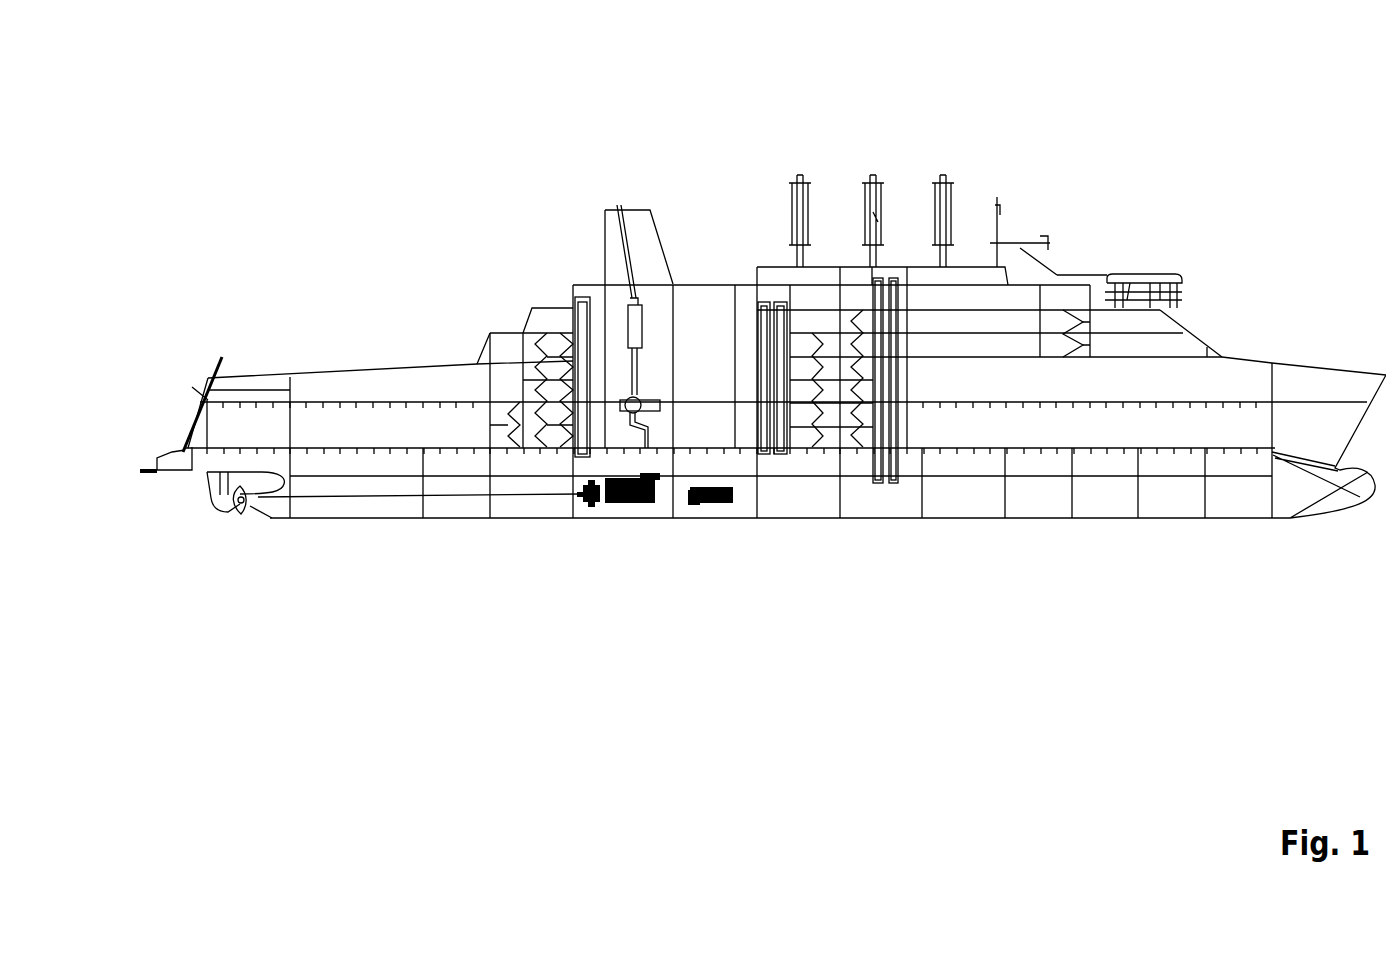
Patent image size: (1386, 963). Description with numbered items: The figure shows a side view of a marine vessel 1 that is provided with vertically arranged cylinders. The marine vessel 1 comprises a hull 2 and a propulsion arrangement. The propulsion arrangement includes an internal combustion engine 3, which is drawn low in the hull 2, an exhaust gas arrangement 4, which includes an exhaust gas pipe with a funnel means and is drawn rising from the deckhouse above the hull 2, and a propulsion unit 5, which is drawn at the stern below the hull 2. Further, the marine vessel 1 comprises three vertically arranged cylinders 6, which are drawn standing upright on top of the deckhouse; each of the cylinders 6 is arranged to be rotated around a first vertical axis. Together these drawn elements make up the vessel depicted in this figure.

The marine vessel 1 is at (1122, 195).
The hull 2 is at (425, 388).
The internal combustion engine 3 is at (632, 500).
The exhaust gas arrangement 4 is at (577, 267).
The propulsion unit 5 is at (272, 542).
The vertically arranged cylinders 6 is at (777, 195).